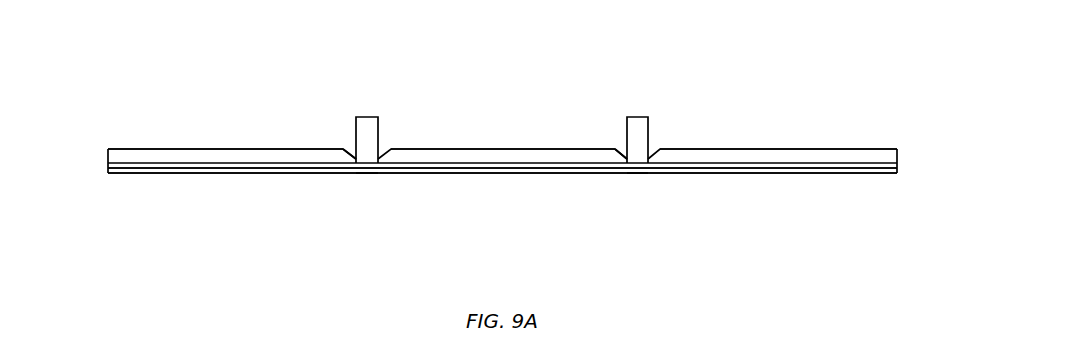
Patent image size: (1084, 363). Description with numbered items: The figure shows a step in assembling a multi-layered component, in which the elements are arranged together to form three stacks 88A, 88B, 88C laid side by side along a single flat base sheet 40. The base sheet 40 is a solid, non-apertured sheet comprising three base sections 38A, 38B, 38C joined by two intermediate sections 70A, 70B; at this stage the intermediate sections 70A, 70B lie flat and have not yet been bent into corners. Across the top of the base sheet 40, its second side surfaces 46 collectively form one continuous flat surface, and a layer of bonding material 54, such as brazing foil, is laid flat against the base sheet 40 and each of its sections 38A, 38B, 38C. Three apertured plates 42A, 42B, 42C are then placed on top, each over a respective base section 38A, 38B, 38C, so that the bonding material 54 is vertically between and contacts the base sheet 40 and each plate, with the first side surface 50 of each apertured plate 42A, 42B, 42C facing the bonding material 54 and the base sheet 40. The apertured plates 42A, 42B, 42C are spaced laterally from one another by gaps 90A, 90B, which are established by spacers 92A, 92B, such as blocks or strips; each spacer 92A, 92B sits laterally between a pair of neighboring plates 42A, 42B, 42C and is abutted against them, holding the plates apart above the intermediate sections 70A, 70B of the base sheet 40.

The base sheet 40 is at (897, 168).
The bonding material 54 is at (107, 167).
The second side surface 46 is at (172, 165).
The first side surface 50 is at (148, 172).
The apertured plate 42A is at (487, 146).
The apertured plate 42B is at (217, 146).
The apertured plate 42C is at (779, 146).
The stack 88A is at (555, 112).
The stack 88B is at (284, 112).
The stack 88C is at (845, 112).
The spacer 92A is at (373, 103).
The spacer 92B is at (642, 103).
The gap 90A is at (351, 161).
The gap 90B is at (623, 161).
The intermediate section 70A is at (367, 180).
The intermediate section 70B is at (638, 180).
The base section 38A is at (502, 181).
The base section 38B is at (232, 180).
The base section 38C is at (759, 181).